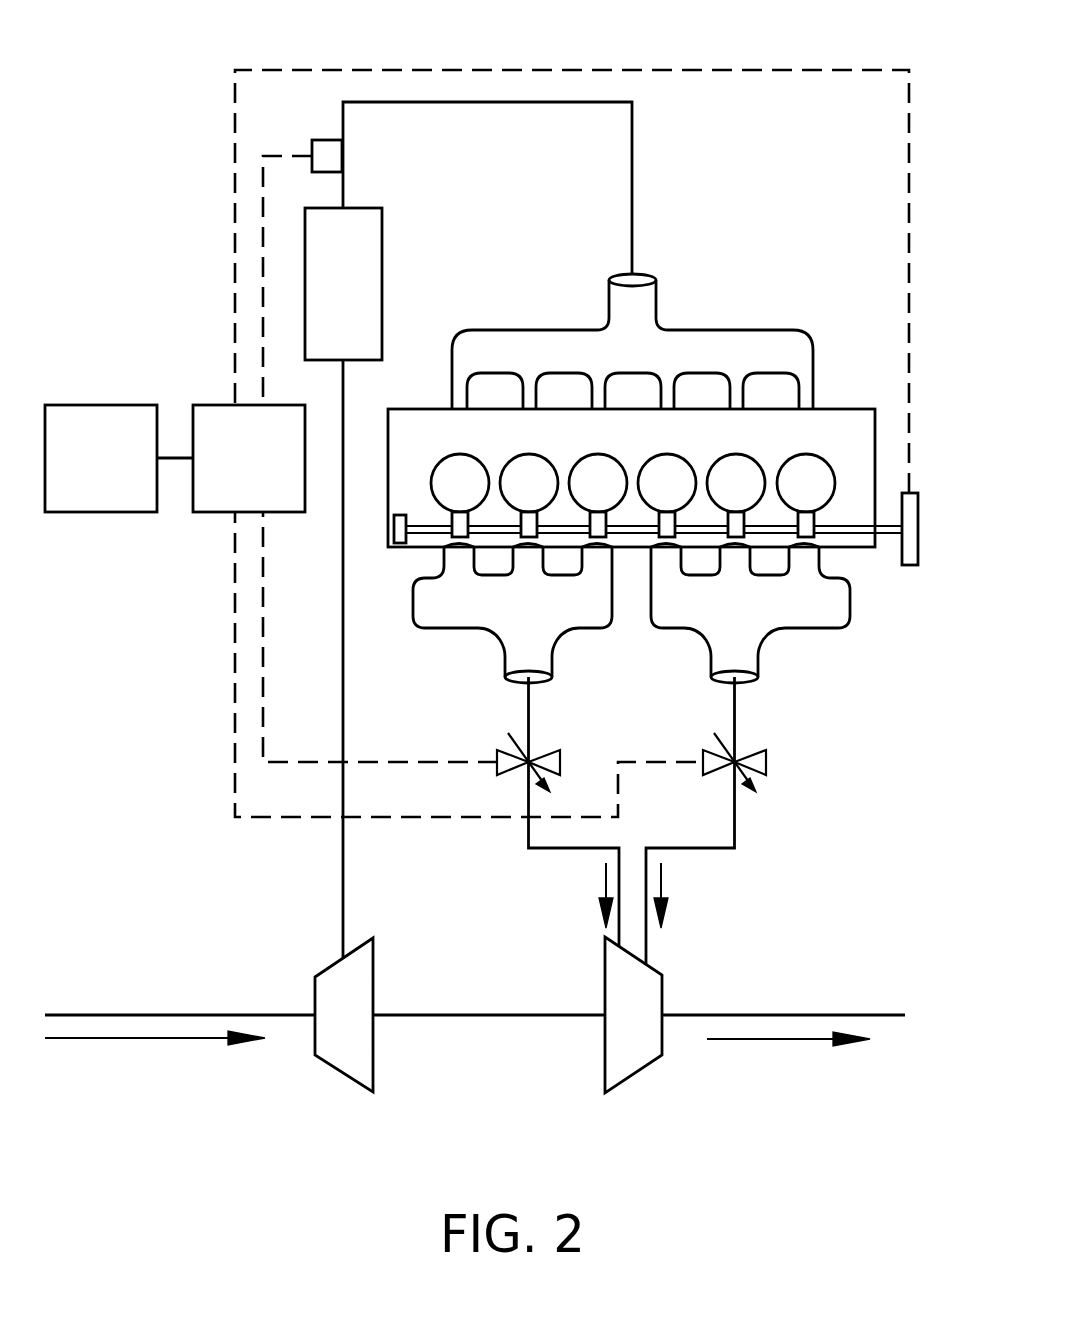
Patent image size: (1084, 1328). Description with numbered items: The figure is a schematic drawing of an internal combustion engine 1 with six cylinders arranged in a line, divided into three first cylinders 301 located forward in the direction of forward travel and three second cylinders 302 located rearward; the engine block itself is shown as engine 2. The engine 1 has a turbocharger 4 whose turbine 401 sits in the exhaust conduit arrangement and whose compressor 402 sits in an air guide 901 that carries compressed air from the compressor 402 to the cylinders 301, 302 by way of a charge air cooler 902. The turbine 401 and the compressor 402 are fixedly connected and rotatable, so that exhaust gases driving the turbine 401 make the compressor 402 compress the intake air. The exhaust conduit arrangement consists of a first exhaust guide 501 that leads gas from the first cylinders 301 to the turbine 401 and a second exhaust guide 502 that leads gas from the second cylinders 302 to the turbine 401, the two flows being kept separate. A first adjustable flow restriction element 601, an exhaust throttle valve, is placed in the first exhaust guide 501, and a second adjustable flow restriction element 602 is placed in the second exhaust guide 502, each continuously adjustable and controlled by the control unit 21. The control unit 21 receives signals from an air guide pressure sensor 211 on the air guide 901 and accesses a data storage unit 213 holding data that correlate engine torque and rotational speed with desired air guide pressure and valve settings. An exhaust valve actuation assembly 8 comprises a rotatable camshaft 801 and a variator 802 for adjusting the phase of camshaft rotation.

The engine 1 is at (166, 58).
The engine 2 is at (844, 409).
The first cylinders 301 is at (586, 456).
The second cylinders 302 is at (680, 456).
The turbocharger 4 is at (475, 1028).
The turbine 401 is at (637, 1073).
The compressor 402 is at (340, 1075).
The first exhaust guide 501 is at (445, 628).
The second exhaust guide 502 is at (822, 630).
The first adjustable flow restriction element 601 is at (497, 762).
The second adjustable flow restriction element 602 is at (767, 762).
The exhaust valve actuation assembly 8 is at (927, 538).
The camshaft 801 is at (887, 530).
The variator 802 is at (909, 565).
The air guide 901 is at (440, 102).
The charge air cooler 902 is at (305, 285).
The air guide pressure sensor 211 is at (322, 140).
The control unit 21 is at (266, 471).
The data storage unit 213 is at (74, 471).